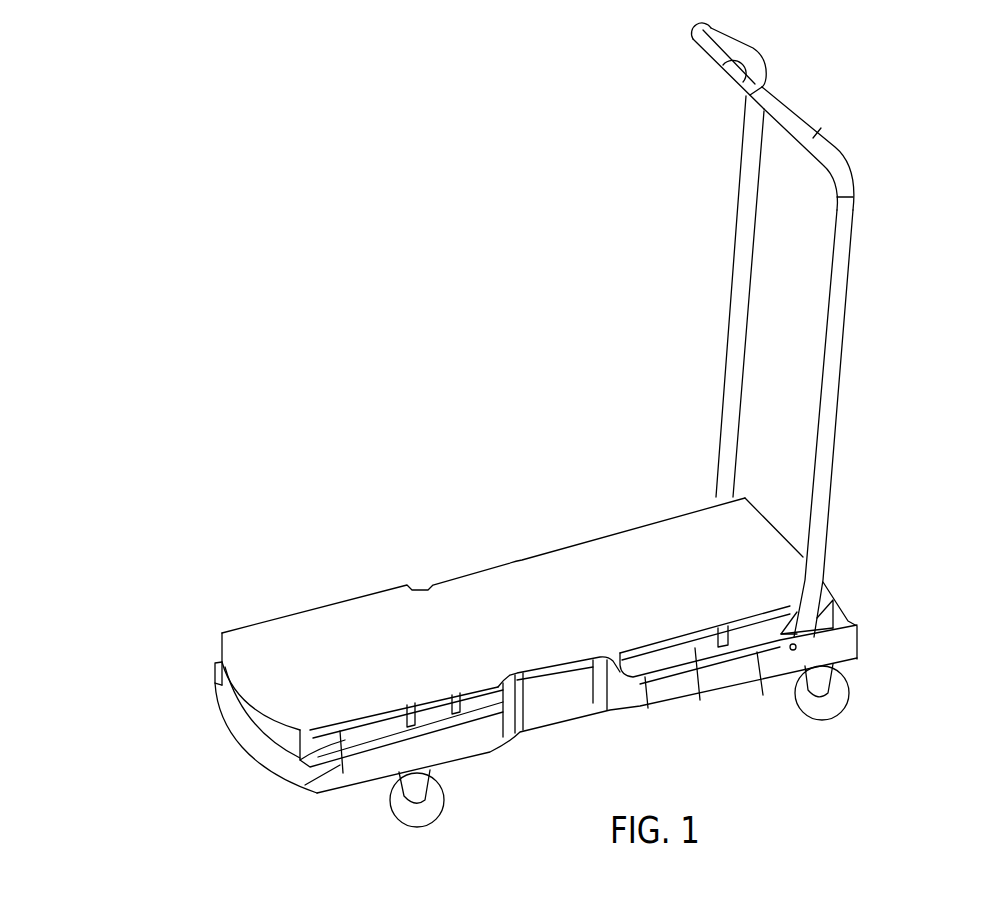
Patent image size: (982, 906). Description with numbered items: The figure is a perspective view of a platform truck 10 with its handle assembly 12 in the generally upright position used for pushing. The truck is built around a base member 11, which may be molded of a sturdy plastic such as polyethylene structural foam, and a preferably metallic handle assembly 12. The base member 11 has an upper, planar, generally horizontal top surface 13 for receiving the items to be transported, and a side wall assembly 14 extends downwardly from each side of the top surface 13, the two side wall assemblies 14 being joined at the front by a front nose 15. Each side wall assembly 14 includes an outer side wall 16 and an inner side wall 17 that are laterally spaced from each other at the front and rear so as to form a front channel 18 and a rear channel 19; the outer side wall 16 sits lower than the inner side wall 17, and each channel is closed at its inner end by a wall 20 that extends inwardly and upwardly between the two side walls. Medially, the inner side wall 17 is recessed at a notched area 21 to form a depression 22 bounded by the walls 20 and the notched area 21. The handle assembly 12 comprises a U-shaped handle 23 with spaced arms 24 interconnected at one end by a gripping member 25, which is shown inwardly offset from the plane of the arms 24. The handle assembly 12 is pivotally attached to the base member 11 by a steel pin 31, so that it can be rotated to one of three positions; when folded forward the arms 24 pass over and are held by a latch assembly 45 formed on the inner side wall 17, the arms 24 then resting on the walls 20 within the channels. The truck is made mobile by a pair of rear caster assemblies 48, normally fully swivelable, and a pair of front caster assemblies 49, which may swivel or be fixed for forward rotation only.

The platform truck 10 is at (802, 81).
The base member 11 is at (220, 610).
The handle assembly 12 is at (858, 275).
The top surface 13 is at (311, 627).
The side wall assembly 14 is at (743, 693).
The front nose 15 is at (232, 718).
The outer side wall 16 is at (467, 747).
The inner side wall 17 is at (370, 722).
The front channel 18 is at (343, 755).
The rear channel 19 is at (773, 670).
The wall 20 is at (520, 735).
The notched area 21 is at (423, 565).
The depression 22 is at (600, 727).
The U-shaped handle 23 is at (843, 162).
The arm 24 is at (738, 298).
The gripping member 25 is at (700, 53).
The steel pin 31 is at (800, 642).
The latch assembly 45 is at (398, 700).
The rear caster assembly 48 is at (847, 680).
The front caster assembly 49 is at (430, 808).